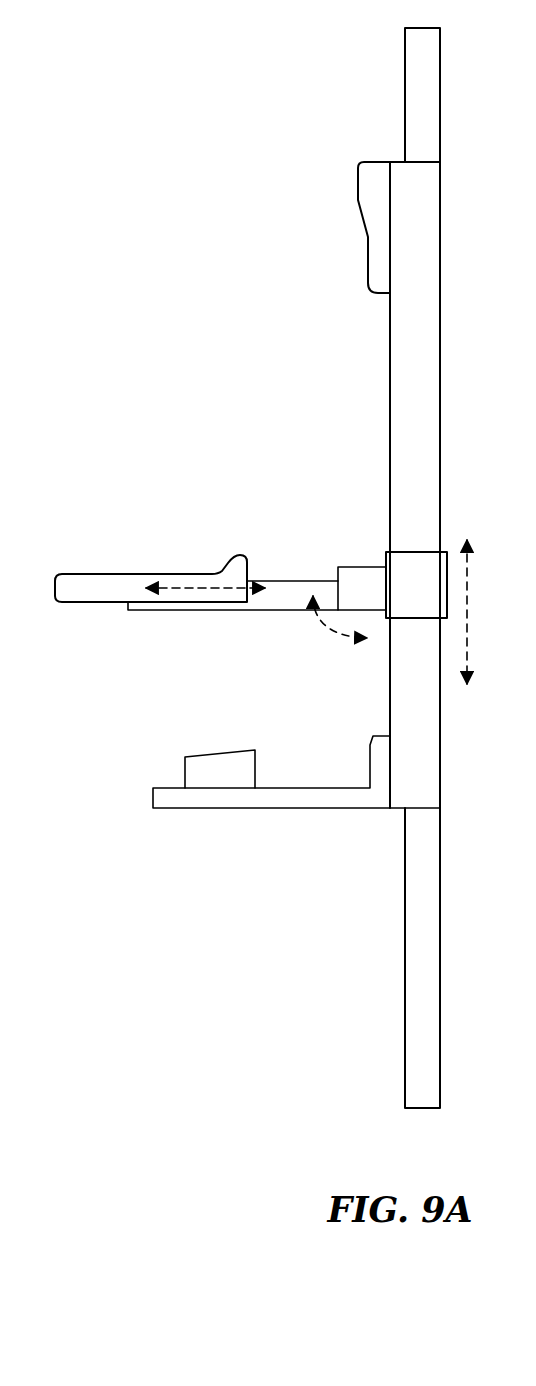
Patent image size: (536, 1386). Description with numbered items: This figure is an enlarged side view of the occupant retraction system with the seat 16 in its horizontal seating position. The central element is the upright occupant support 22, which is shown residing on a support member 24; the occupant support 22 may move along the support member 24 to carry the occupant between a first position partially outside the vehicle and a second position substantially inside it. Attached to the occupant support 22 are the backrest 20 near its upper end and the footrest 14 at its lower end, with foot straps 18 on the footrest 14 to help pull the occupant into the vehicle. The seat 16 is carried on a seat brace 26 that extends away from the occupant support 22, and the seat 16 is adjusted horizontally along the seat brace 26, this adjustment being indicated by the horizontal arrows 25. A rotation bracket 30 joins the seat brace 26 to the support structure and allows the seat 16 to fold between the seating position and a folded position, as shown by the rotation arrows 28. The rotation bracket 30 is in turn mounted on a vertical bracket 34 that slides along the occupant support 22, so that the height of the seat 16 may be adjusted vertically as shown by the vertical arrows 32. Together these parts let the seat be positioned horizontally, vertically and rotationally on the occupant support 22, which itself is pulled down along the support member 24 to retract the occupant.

The footrest 14 is at (317, 803).
The seat 16 is at (87, 592).
The foot straps 18 is at (218, 767).
The backrest 20 is at (367, 187).
The occupant support 22 is at (417, 383).
The support member 24 is at (427, 105).
The horizontal arrows 25 is at (197, 588).
The seat brace 26 is at (270, 600).
The rotation arrows 28 is at (325, 618).
The rotation bracket 30 is at (348, 582).
The vertical arrows 32 is at (473, 557).
The vertical bracket 34 is at (412, 570).